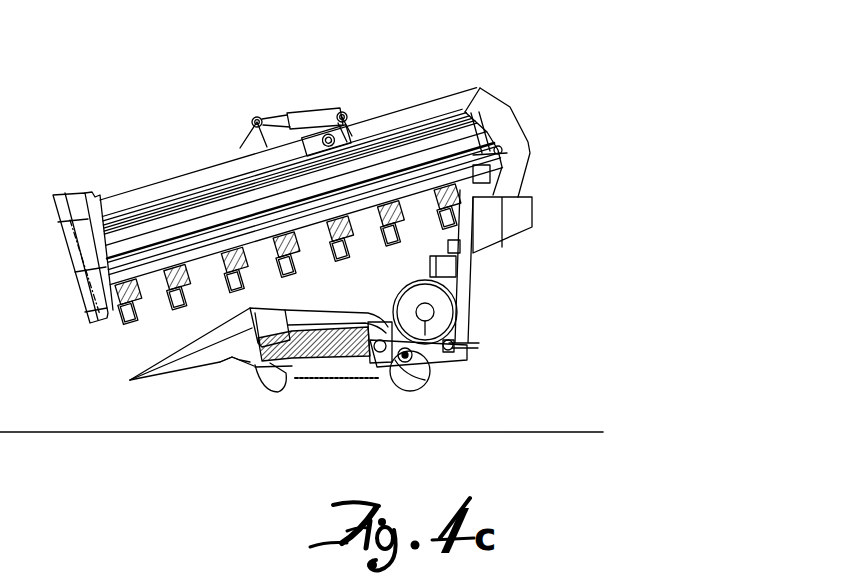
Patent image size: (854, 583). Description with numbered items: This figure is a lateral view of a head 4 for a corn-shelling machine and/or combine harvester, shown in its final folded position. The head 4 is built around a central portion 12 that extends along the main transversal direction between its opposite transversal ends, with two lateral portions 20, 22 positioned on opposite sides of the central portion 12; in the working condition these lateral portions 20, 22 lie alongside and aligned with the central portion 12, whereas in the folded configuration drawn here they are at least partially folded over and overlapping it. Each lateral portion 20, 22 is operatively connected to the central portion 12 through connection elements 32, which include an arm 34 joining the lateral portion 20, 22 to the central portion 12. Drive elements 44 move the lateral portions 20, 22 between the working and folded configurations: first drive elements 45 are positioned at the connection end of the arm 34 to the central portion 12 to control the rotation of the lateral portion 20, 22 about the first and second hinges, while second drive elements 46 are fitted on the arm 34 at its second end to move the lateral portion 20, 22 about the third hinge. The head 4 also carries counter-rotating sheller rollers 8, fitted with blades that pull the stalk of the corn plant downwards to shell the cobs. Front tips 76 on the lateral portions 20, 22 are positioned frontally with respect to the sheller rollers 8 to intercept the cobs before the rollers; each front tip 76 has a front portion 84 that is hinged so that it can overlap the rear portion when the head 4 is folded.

The head 4 is at (377, 174).
The second drive elements 46 is at (300, 112).
The lateral portion 20 is at (438, 52).
The lateral portion 22 is at (407, 103).
The connection elements 32 is at (559, 93).
The arm 34 is at (507, 115).
The drive elements 44 is at (594, 213).
The first drive elements 45 is at (490, 184).
The front tips 76 is at (150, 394).
The front portion 84 is at (192, 370).
The sheller rollers 8 is at (254, 366).
The central portion 12 is at (441, 385).